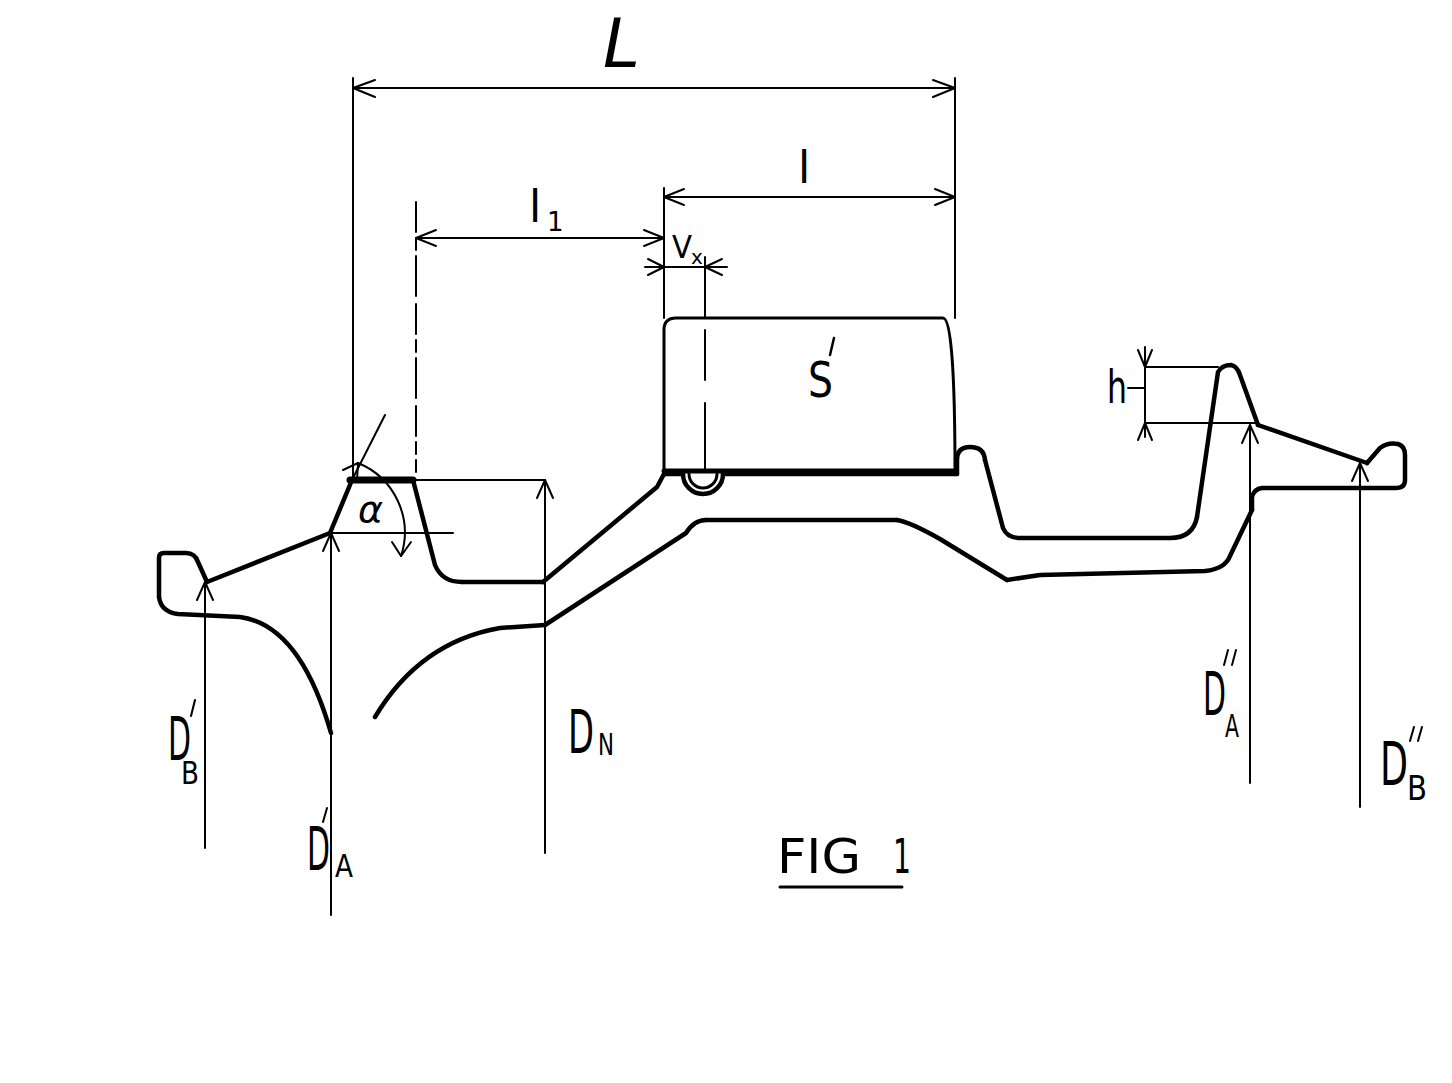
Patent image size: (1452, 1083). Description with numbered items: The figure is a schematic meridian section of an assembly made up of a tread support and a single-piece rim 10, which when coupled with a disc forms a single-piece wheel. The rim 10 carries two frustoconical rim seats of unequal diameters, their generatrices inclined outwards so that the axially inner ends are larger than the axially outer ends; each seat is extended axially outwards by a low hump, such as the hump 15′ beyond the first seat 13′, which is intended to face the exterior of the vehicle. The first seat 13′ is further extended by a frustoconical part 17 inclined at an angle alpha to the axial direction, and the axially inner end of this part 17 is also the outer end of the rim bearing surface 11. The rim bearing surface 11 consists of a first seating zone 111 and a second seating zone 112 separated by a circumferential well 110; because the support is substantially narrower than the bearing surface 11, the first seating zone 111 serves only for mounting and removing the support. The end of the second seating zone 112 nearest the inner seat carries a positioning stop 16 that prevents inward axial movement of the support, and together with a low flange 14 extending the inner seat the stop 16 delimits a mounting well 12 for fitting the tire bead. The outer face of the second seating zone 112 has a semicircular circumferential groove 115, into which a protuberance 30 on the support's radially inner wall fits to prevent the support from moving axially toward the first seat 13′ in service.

The single-piece rim 10 is at (615, 550).
The rim bearing surface 11 is at (830, 480).
The mounting well 12 is at (1098, 533).
The first frustoconical rim seat 13′ is at (279, 453).
The flange 14 is at (1217, 367).
The hump 15′ is at (180, 590).
The positioning stop 16 is at (983, 450).
The frustoconical part 17 is at (329, 520).
The protuberance 30 is at (708, 493).
The circumferential well 110 is at (498, 563).
The first seating zone 111 is at (395, 472).
The second seating zone 112 is at (925, 480).
The circumferential groove 115 is at (703, 500).